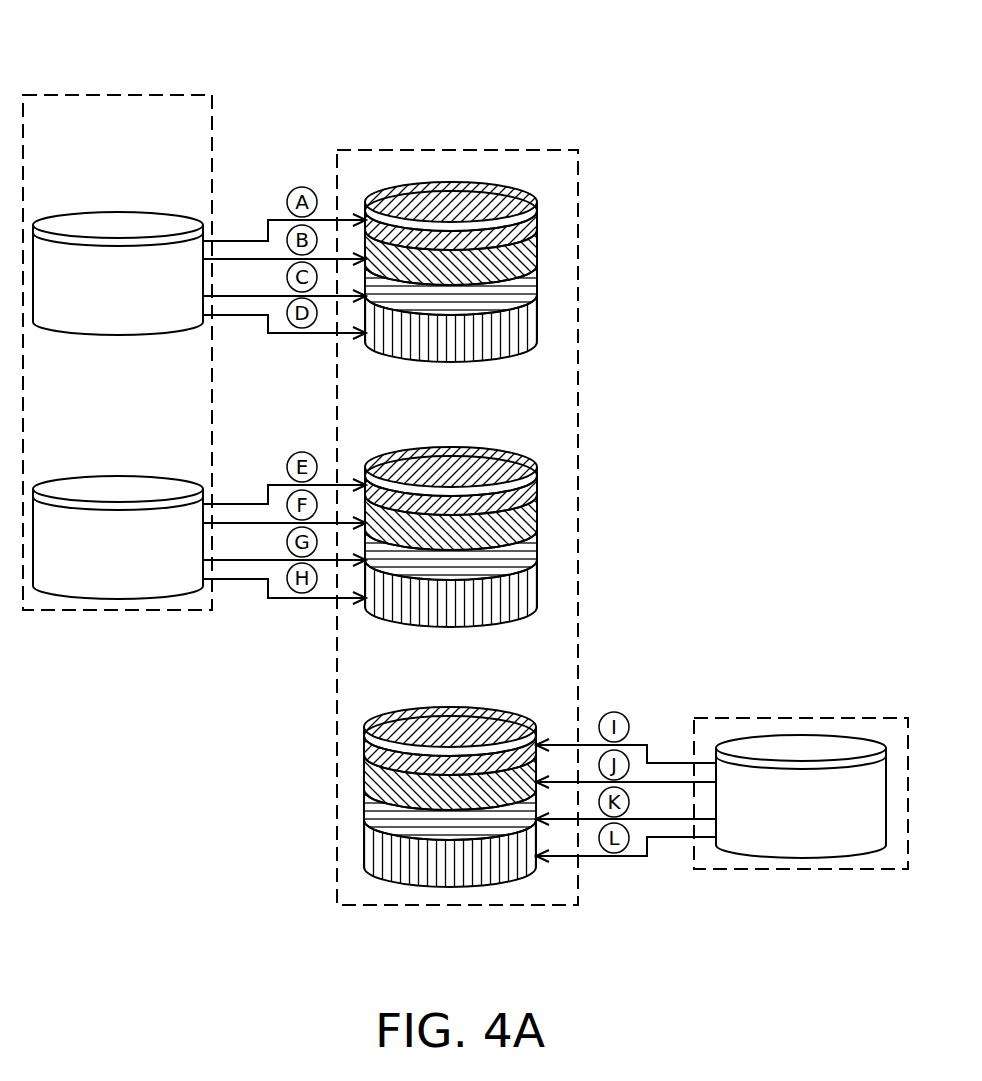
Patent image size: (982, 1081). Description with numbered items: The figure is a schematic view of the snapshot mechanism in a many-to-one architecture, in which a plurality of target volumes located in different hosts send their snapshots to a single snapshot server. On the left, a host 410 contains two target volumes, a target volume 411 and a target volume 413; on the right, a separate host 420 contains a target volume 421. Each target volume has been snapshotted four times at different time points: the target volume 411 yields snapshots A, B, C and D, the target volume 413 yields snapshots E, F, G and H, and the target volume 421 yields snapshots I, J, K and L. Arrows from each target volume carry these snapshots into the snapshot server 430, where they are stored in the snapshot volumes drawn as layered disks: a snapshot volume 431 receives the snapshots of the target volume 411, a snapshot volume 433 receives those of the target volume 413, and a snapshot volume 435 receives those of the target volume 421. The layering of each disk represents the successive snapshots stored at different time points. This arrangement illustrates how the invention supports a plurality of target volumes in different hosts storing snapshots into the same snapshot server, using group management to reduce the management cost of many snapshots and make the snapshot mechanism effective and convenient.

The host 410 is at (115, 95).
The target volume 411 is at (123, 210).
The target volume 413 is at (123, 474).
The host 420 is at (882, 715).
The target volume 421 is at (802, 734).
The snapshot server 430 is at (458, 149).
The snapshot volume 431 is at (380, 186).
The snapshot volume 433 is at (380, 451).
The snapshot volume 435 is at (503, 708).